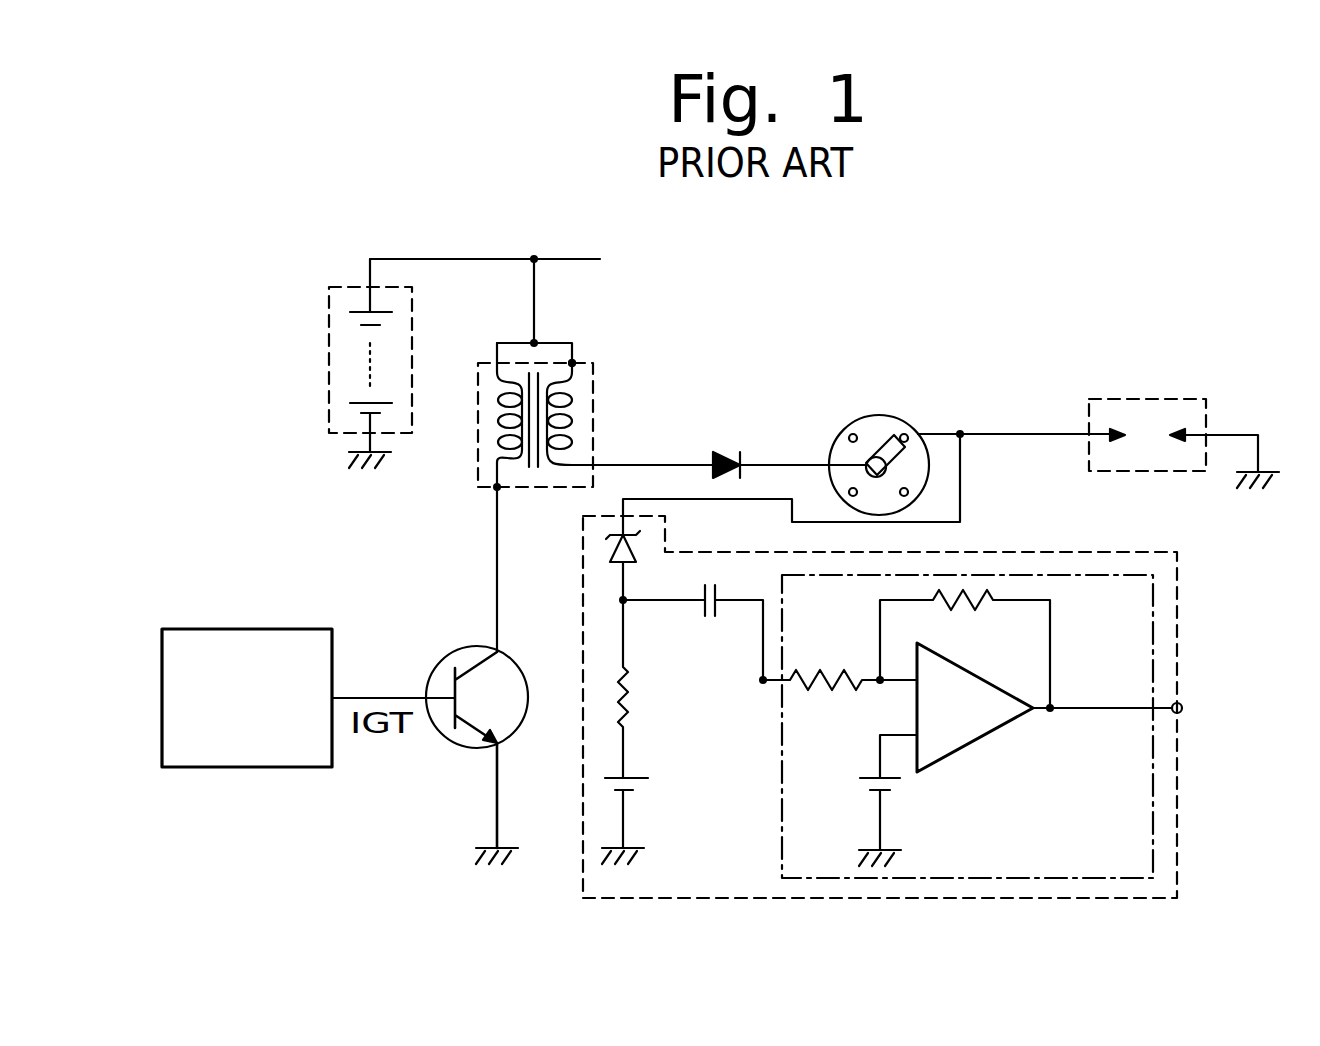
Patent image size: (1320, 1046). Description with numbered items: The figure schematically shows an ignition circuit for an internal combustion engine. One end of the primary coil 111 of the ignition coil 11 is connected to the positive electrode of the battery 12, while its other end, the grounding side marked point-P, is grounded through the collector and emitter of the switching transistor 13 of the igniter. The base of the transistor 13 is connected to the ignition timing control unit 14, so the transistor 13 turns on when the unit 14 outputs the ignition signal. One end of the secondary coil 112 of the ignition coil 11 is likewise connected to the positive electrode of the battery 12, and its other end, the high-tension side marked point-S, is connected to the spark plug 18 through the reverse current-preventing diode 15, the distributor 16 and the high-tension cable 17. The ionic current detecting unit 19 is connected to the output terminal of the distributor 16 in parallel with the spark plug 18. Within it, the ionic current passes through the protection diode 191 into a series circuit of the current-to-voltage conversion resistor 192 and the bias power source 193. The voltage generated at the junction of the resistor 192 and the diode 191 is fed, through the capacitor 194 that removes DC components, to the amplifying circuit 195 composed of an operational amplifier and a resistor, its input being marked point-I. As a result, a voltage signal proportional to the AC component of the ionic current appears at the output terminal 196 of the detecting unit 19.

The ignition coil 11 is at (551, 377).
The primary coil 111 is at (500, 440).
The secondary coil 112 is at (573, 412).
The battery 12 is at (329, 350).
The switching transistor 13 is at (522, 668).
The ignition timing control unit 14 is at (247, 629).
The reverse current-preventing diode 15 is at (727, 452).
The distributor 16 is at (889, 415).
The high-tension cable 17 is at (1027, 434).
The spark plug 18 is at (1152, 399).
The ionic current detecting unit 19 is at (932, 707).
The protection diode 191 is at (635, 548).
The current-to-voltage conversion resistor 192 is at (640, 706).
The bias power source 193 is at (645, 785).
The capacitor 194 is at (710, 620).
The amplifying circuit 195 is at (1153, 822).
The output terminal 196 is at (1183, 708).
The point- S is at (573, 363).
The point- P is at (497, 487).
The point- I is at (760, 683).